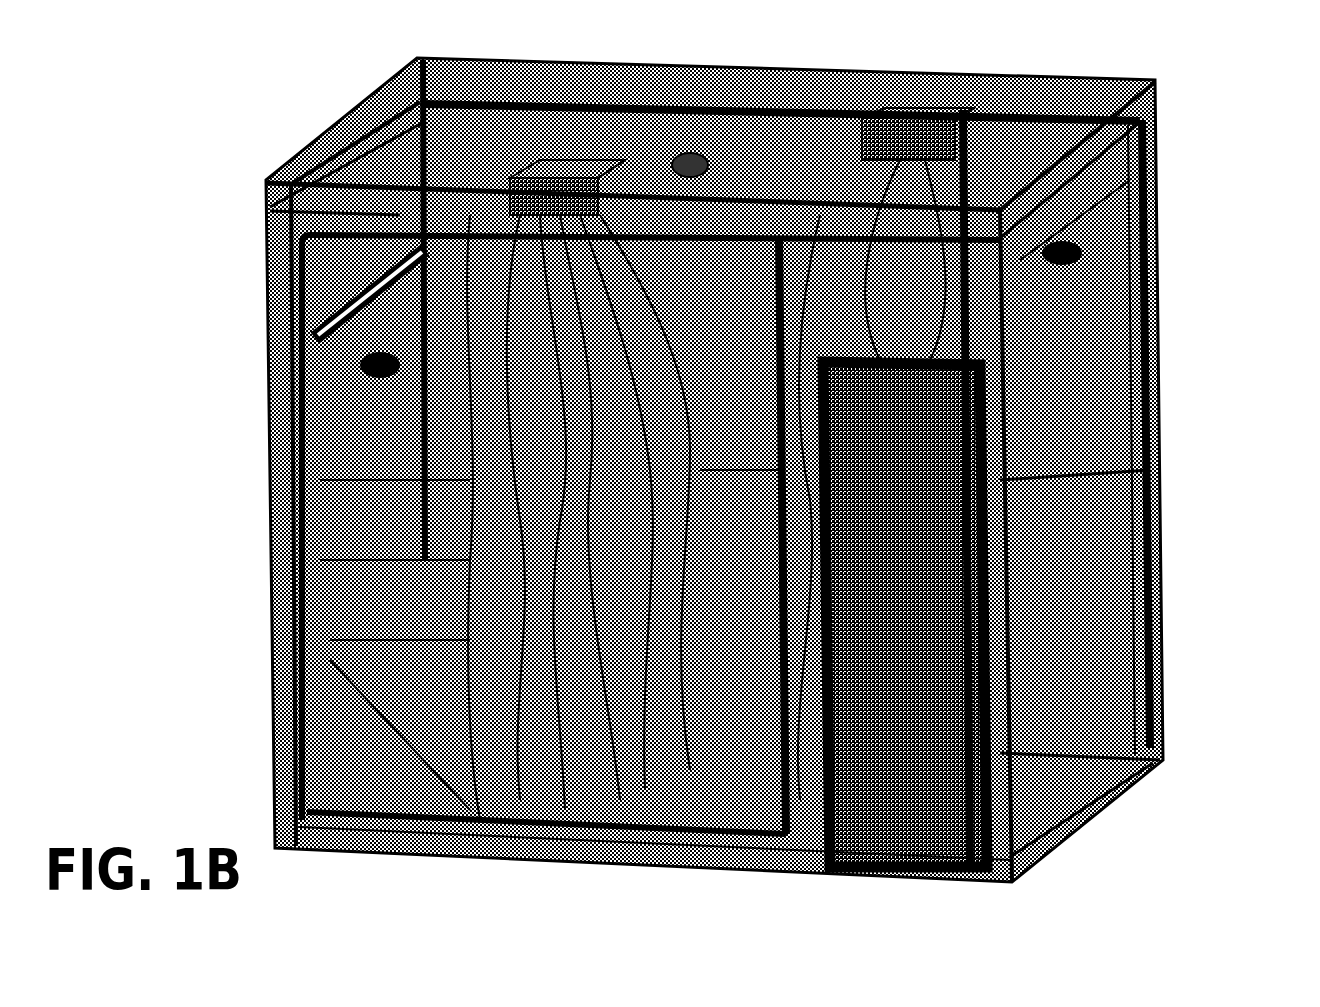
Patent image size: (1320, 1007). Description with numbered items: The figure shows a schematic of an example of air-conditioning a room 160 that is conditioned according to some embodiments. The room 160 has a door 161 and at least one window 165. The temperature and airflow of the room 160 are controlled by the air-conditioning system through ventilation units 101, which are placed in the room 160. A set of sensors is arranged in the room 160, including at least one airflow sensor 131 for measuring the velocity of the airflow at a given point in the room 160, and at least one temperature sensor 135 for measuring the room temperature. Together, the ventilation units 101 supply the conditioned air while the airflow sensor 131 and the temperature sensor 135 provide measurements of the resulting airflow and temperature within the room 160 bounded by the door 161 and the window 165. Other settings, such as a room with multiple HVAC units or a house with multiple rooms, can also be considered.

The ventilation unit 101 is at (568, 152).
The airflow sensor 131 is at (363, 357).
The temperature sensor 135 is at (690, 155).
The room 160 is at (272, 547).
The door 161 is at (952, 585).
The window 165 is at (1120, 282).